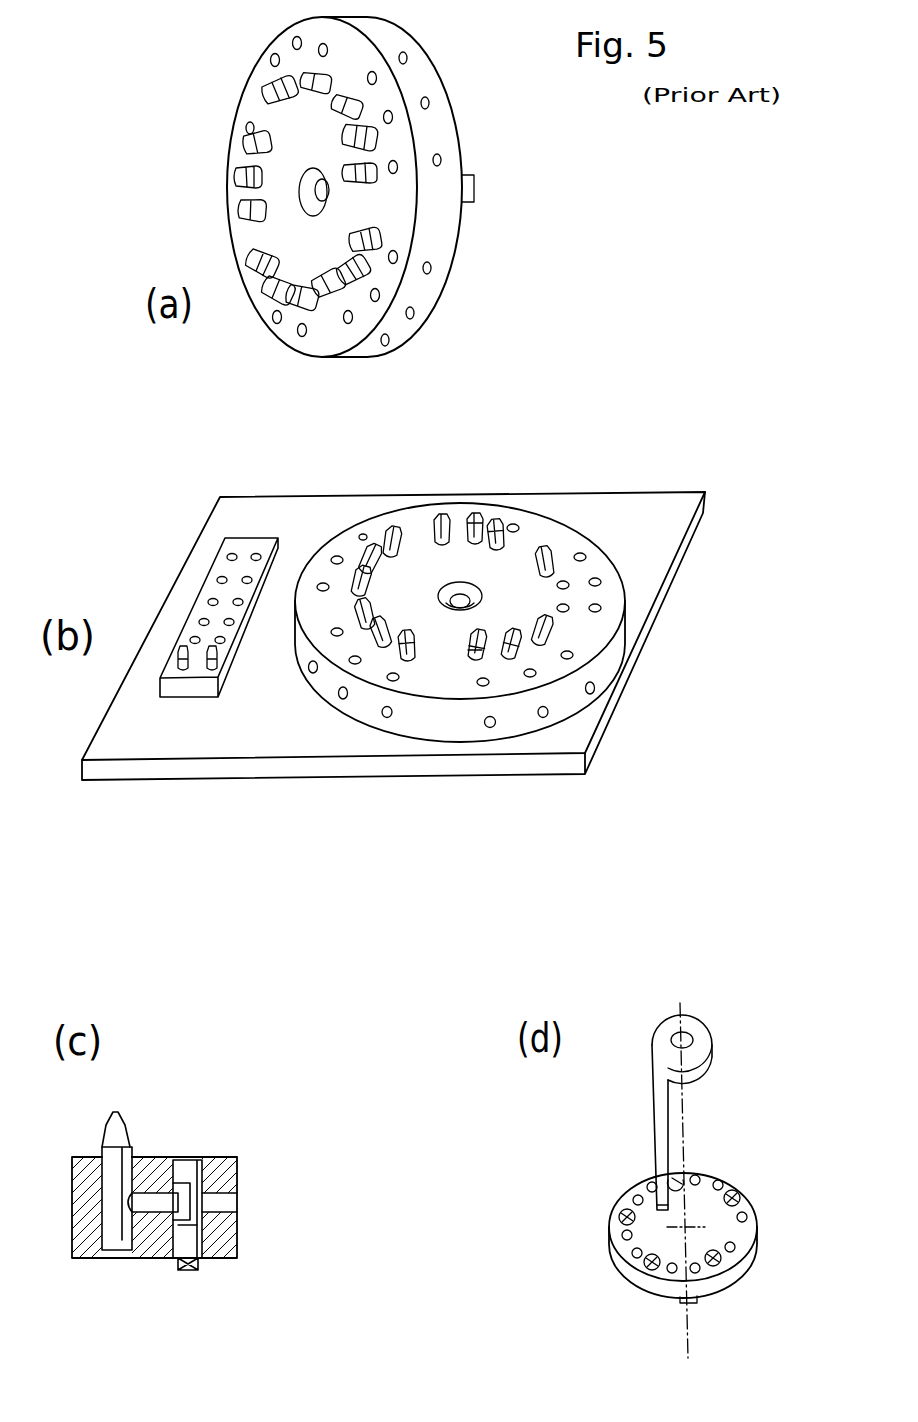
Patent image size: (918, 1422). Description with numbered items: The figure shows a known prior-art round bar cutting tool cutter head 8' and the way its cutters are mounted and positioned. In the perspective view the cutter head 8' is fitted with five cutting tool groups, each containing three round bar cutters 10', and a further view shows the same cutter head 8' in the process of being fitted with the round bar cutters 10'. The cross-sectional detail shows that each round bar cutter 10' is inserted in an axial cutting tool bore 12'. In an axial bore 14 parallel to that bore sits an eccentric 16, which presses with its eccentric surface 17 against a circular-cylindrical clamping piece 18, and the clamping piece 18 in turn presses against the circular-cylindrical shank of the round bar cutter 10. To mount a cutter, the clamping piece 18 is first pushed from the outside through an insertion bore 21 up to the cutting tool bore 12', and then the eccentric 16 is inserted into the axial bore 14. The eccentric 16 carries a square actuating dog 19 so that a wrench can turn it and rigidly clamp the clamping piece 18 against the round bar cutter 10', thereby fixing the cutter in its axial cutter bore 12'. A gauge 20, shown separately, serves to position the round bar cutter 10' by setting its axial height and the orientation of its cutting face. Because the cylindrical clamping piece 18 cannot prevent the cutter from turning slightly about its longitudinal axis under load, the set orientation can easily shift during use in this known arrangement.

In FIG. 5a, the round bar cutting tool cutter head 8' is at (378, 187).
In FIG. 5c, the round bar cutting tool cutter head 8' is at (154, 1251).
In FIG. 5b, the round bar cutter 10' is at (526, 494).
In FIG. 5c, the round bar cutter 10' is at (153, 1105).
In FIG. 5b, the round bar cutter 10 is at (434, 727).
In FIG. 5b, the axial cutting tool bore 12' is at (452, 738).
In FIG. 5c, the axial cutting tool bore 12' is at (106, 1246).
In FIG. 5b, the axial bore 14 is at (482, 690).
In FIG. 5c, the axial bore 14 is at (190, 1157).
In FIG. 5b, the insertion bore 21 is at (491, 730).
In FIG. 5c, the insertion bore 21 is at (223, 1202).
In FIG. 5c, the eccentric surface 17 is at (190, 1185).
In FIG. 5c, the clamping piece 18 is at (153, 1203).
In FIG. 5c, the square actuating dog 19 is at (188, 1272).
In FIG. 5c, the eccentric 16 is at (190, 1233).
In FIG. 5d, the gauge 20 is at (662, 1133).